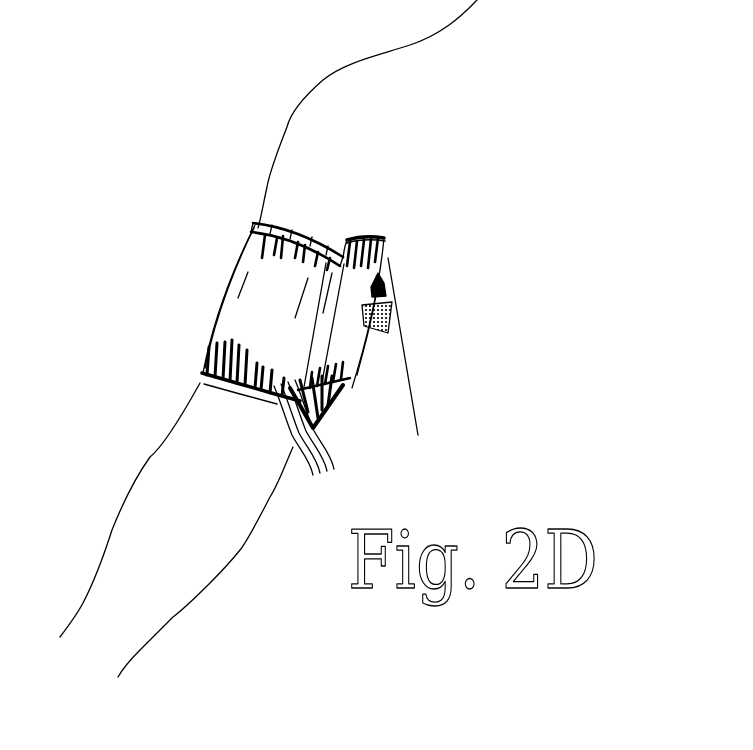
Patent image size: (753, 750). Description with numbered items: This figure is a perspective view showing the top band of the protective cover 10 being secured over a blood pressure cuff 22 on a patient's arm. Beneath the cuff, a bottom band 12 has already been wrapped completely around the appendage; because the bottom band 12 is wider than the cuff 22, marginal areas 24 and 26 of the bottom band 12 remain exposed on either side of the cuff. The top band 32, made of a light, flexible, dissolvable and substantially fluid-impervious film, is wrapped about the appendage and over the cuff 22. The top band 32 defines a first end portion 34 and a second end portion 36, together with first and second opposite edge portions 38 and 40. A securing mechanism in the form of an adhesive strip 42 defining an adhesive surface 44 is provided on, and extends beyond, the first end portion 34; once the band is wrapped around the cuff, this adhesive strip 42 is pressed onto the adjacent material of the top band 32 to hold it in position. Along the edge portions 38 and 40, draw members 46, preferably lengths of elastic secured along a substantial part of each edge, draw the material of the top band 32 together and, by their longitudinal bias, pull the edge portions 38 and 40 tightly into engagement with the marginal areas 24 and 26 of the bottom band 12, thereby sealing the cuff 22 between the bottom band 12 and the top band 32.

The protective cover 10 is at (157, 222).
The bottom band 12 is at (240, 392).
The blood pressure cuff 22 is at (303, 330).
The marginal area 24 is at (268, 410).
The marginal area 26 is at (343, 258).
The top band 32 is at (230, 274).
The first end portion 34 is at (386, 256).
The second end portion 36 is at (332, 240).
The first edge portion 38 is at (228, 386).
The second edge portion 40 is at (272, 224).
The adhesive strip 42 is at (392, 322).
The adhesive surface 44 is at (393, 305).
The draw members 46 is at (296, 227).